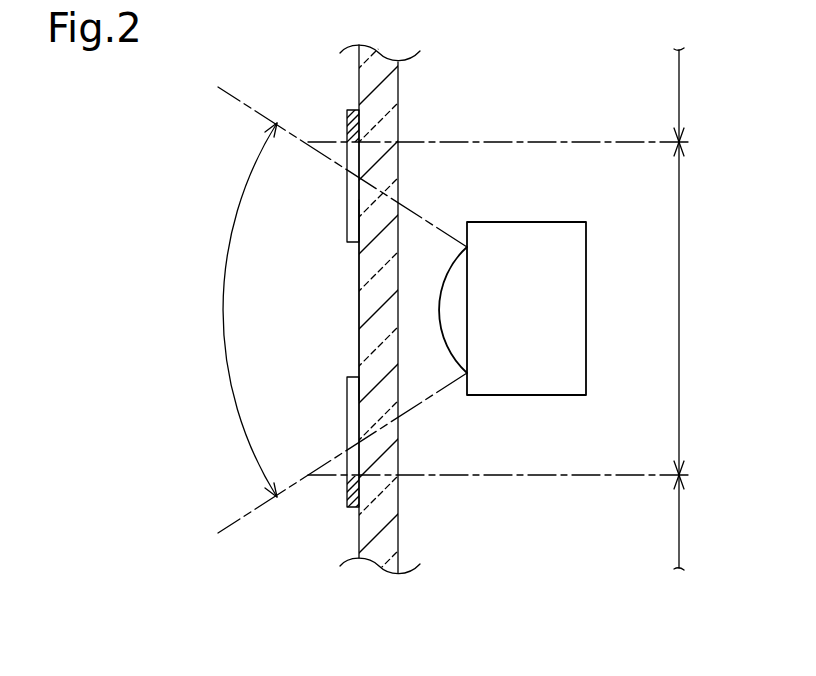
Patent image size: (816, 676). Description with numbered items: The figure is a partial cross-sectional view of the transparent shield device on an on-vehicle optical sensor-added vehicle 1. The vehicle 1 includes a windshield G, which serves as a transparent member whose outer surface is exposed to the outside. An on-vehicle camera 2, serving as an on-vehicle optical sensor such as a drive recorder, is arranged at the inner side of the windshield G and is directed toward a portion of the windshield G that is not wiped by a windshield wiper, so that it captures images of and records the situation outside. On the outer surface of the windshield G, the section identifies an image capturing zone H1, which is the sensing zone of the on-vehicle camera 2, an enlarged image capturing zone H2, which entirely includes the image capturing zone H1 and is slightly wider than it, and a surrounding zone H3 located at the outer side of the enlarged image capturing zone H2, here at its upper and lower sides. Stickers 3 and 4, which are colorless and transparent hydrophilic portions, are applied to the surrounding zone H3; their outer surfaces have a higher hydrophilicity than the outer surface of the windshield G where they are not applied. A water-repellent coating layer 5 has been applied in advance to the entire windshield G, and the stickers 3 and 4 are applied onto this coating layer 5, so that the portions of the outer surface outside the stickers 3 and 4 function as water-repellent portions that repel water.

The vehicle 1 is at (330, 70).
The on-vehicle camera 2 is at (445, 346).
The sticker 3 is at (348, 120).
The sticker 4 is at (347, 501).
The water-repellent coating layer 5 is at (359, 302).
The windshield G is at (392, 532).
The image capturing zone H1 is at (223, 306).
The enlarged image capturing zone H2 is at (512, 308).
The surrounding zone H3 is at (695, 309).